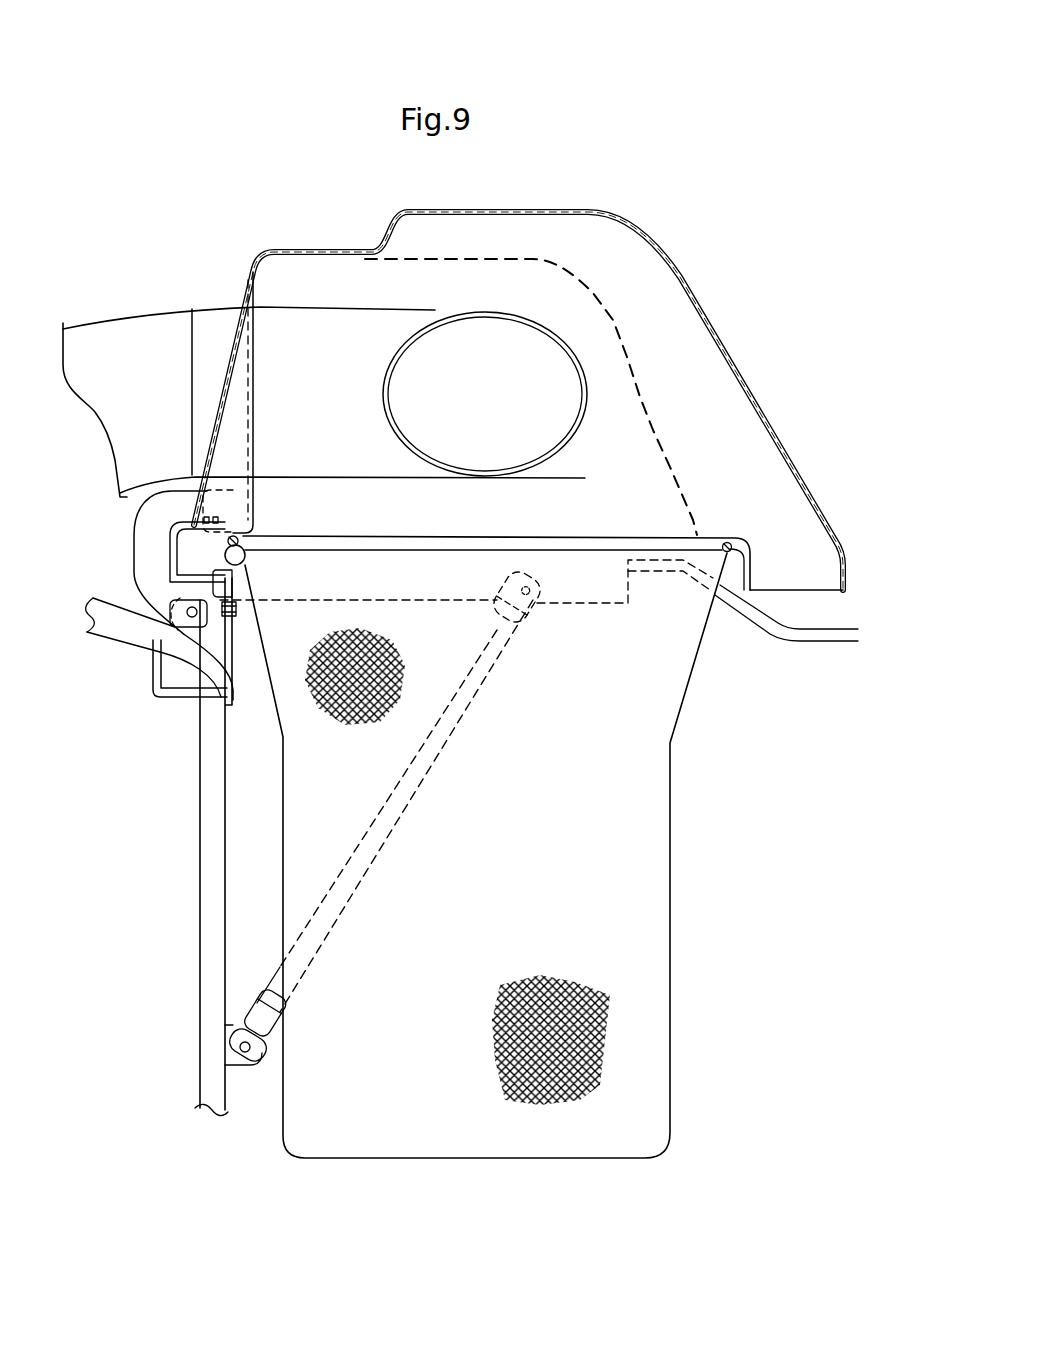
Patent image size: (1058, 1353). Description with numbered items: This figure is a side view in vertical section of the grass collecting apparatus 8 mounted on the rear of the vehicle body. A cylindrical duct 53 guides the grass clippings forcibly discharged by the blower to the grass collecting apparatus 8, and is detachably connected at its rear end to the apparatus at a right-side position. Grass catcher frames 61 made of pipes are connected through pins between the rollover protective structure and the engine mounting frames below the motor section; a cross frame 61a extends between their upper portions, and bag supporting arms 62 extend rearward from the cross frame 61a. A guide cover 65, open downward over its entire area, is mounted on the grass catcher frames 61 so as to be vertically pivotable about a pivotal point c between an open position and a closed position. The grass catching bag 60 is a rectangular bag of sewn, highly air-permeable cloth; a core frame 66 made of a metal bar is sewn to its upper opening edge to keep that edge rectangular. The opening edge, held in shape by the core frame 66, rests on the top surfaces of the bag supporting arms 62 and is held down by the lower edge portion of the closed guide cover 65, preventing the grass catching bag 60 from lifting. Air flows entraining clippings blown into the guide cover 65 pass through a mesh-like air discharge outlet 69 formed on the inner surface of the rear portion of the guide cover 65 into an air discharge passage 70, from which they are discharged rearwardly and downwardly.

The grass collecting apparatus 8 is at (694, 239).
The cylindrical duct 53 is at (120, 318).
The grass catching bag 60 is at (672, 881).
The grass catcher frame 61 is at (207, 876).
The cross frame 61a is at (177, 557).
The bag supporting arm 62 is at (570, 597).
The guide cover 65 is at (305, 252).
The core frame 66 is at (445, 540).
The air discharge outlet 69 is at (650, 413).
The air discharge passage 70 is at (711, 384).
The pivotal point c is at (178, 609).